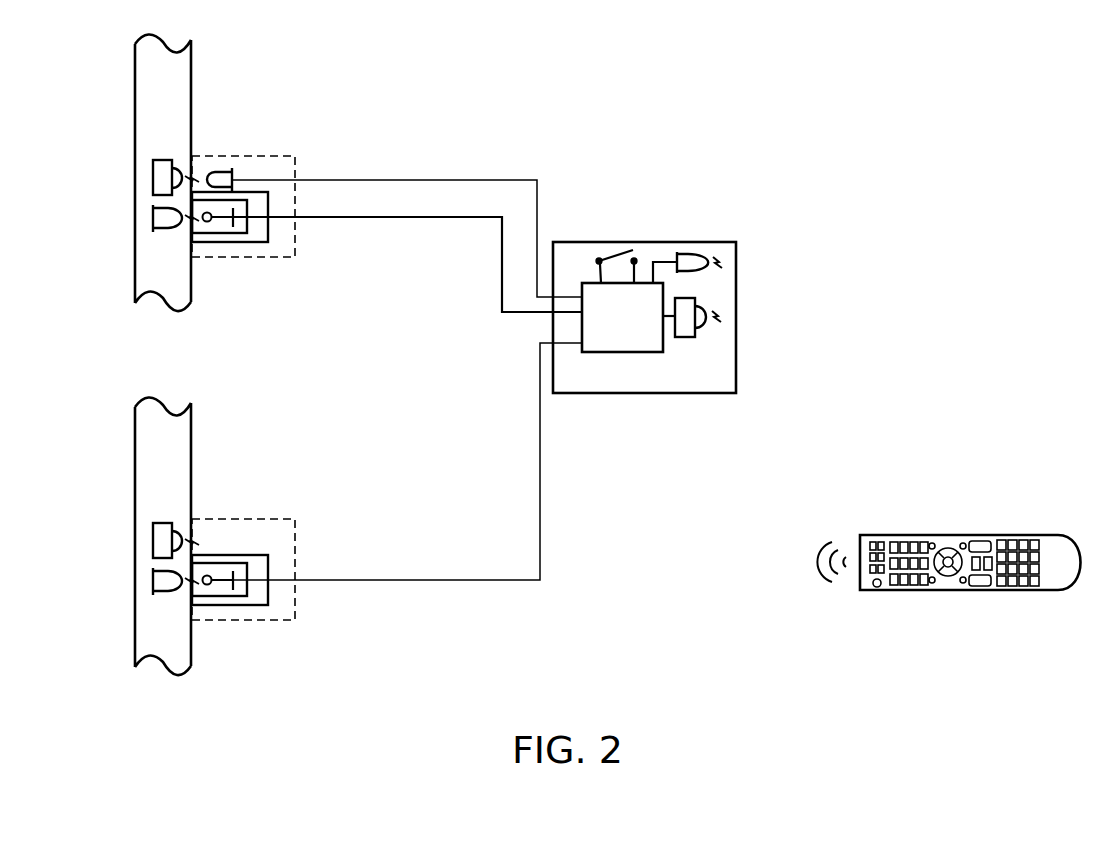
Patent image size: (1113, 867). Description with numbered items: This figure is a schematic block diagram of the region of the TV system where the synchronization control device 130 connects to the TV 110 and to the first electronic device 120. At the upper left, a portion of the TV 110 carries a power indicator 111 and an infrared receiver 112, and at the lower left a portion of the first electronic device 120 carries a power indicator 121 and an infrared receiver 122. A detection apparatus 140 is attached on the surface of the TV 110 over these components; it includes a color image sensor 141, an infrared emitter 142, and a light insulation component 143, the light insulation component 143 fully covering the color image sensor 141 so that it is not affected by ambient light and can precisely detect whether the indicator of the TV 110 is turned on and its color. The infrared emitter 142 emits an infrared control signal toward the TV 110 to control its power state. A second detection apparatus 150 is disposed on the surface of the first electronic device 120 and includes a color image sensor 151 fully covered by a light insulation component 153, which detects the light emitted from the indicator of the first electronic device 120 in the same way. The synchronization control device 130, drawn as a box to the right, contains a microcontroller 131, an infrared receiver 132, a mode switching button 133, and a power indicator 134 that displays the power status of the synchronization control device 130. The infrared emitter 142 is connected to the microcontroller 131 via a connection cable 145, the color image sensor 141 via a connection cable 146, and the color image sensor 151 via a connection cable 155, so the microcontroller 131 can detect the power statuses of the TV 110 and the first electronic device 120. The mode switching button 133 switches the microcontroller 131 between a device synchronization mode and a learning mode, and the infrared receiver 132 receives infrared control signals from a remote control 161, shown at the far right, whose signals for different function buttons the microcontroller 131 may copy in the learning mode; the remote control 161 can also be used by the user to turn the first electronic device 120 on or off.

The TV 110 is at (153, 115).
The power indicator 111 is at (153, 178).
The infrared receiver 112 is at (153, 217).
The first electronic device 120 is at (153, 478).
The power indicator 121 is at (153, 541).
The infrared receiver 122 is at (153, 580).
The synchronization control device 130 is at (568, 242).
The microcontroller 131 is at (625, 353).
The infrared receiver 132 is at (687, 338).
The mode switching button 133 is at (612, 252).
The power indicator 134 is at (690, 252).
The detection apparatus 140 is at (296, 235).
The color image sensor 141 is at (212, 214).
The infrared emitter 142 is at (218, 170).
The light insulation component 143 is at (230, 243).
The connection cable 145 is at (430, 178).
The connection cable 146 is at (430, 219).
The detection apparatus 150 is at (296, 598).
The color image sensor 151 is at (214, 577).
The light insulation component 153 is at (230, 606).
The connection cable 155 is at (430, 578).
The remote control 161 is at (962, 535).